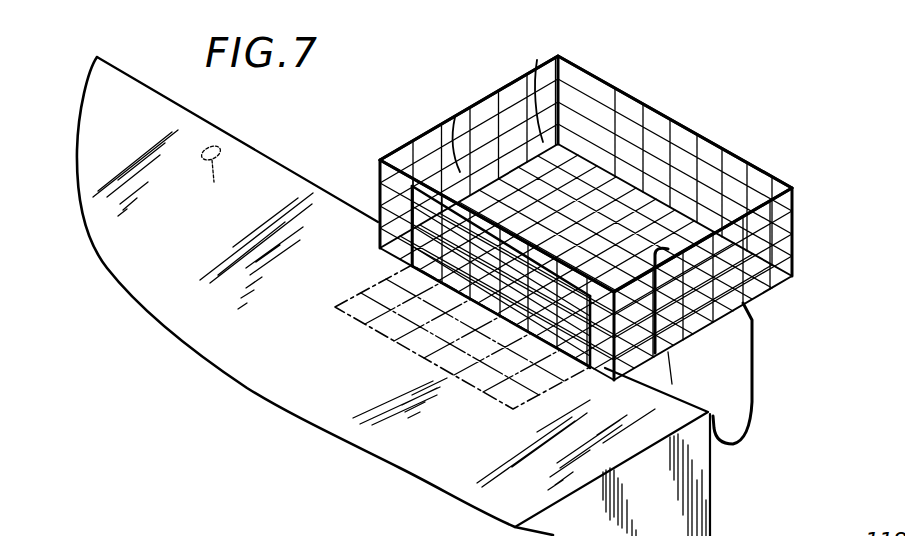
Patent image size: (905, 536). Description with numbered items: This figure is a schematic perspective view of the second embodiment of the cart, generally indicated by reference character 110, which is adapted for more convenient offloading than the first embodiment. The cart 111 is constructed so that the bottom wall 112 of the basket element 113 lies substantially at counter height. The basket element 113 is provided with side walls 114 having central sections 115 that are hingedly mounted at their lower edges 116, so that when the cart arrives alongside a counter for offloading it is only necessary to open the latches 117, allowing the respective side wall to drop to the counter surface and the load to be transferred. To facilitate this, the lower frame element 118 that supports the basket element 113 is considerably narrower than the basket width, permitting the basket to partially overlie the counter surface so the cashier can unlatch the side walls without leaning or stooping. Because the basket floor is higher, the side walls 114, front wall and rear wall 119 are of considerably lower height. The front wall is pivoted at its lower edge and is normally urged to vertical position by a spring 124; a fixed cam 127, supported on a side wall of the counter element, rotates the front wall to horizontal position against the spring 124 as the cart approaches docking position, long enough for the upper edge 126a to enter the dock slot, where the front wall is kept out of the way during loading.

The second embodiment of the cart 110 is at (806, 188).
The cart 111 is at (580, 56).
The bottom wall 112 is at (612, 177).
The basket element 113 is at (622, 389).
The side walls 114 is at (377, 227).
The central sections 115 is at (458, 116).
The lower edges 116 is at (573, 366).
The latches 117 is at (400, 192).
The lower frame element 118 is at (507, 85).
The rear wall 119 is at (738, 306).
The spring 124 is at (547, 62).
The upper edge 126a is at (438, 134).
The fixed cam 127 is at (223, 175).